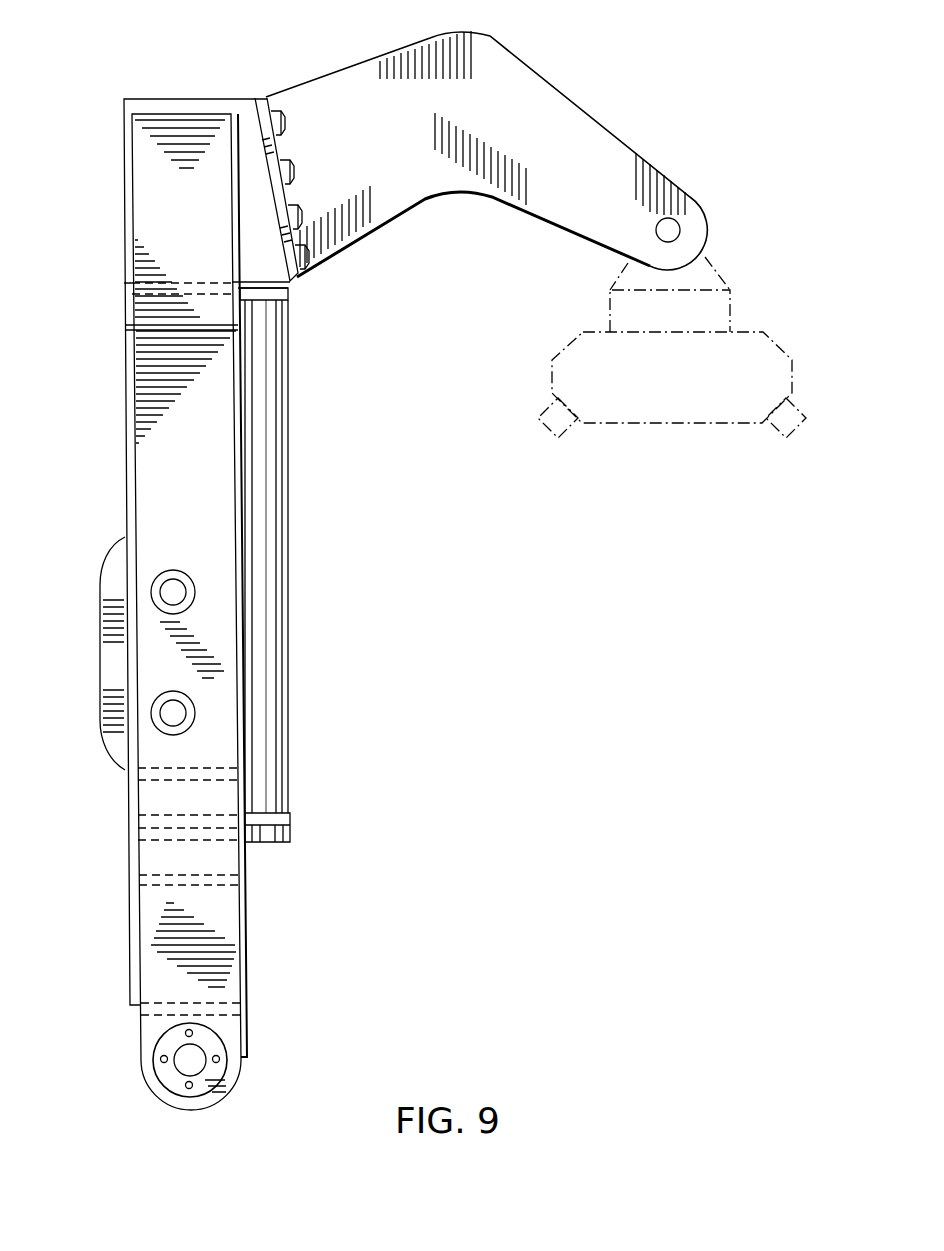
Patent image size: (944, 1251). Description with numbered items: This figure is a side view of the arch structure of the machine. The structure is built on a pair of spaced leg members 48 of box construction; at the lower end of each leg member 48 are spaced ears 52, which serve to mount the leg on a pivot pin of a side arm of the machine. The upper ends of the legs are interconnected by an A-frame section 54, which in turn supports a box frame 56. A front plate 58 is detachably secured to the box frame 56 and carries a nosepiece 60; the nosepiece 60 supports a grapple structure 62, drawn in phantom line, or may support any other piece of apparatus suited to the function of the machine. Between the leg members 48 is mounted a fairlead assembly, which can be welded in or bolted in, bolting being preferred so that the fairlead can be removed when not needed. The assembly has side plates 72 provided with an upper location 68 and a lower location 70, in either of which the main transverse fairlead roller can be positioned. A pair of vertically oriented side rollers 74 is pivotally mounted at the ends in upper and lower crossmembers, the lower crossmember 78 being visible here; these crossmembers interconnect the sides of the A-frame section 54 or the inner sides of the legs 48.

The leg member 48 is at (213, 922).
The ear 52 is at (228, 1033).
The A-frame section 54 is at (155, 147).
The box frame 56 is at (248, 115).
The front plate 58 is at (280, 150).
The nosepiece 60 is at (447, 180).
The grapple structure 62 is at (577, 340).
The upper location 68 is at (175, 570).
The lower location 70 is at (195, 710).
The side plate 72 is at (175, 473).
The side roller 74 is at (270, 473).
The lower crossmember 78 is at (200, 822).